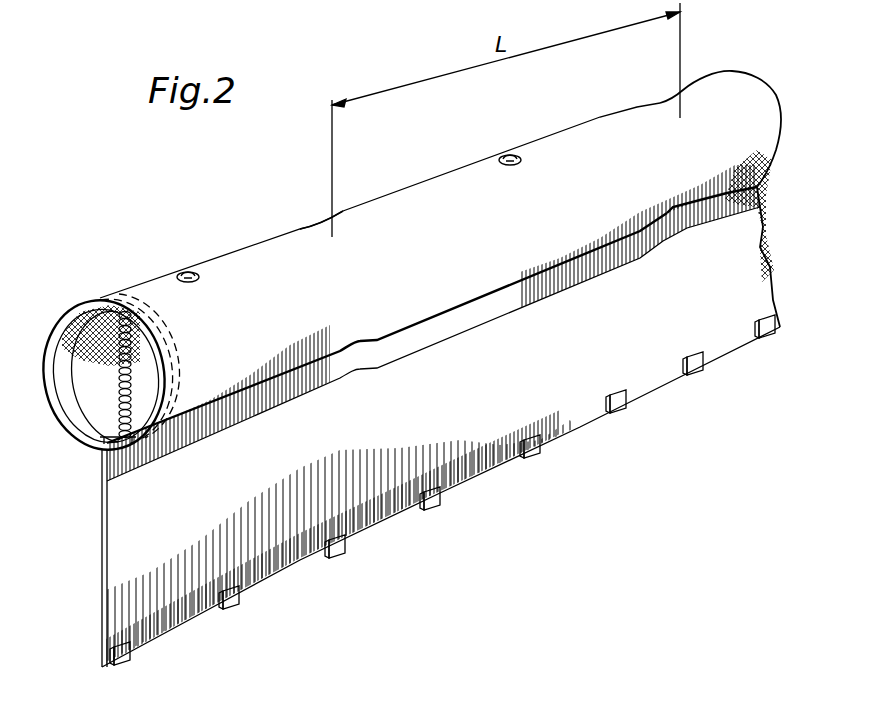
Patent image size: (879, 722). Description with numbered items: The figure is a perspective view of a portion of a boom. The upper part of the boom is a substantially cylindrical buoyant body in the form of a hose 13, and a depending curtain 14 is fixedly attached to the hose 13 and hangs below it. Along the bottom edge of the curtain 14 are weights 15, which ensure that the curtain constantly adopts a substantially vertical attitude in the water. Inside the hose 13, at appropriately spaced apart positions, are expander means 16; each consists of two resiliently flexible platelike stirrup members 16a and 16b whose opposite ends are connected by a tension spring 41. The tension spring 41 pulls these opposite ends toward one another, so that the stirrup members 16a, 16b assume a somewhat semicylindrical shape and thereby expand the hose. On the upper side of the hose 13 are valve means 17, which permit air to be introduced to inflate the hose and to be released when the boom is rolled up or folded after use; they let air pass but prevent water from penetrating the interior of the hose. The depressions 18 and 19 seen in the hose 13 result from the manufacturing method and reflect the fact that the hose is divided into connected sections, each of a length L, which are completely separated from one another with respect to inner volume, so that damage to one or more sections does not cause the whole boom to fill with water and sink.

The hose 13 is at (240, 252).
The curtain 14 is at (102, 538).
The weights 15 is at (338, 544).
The expander means 16 is at (108, 445).
The stirrup member 16a is at (76, 420).
The stirrup member 16b is at (200, 318).
The valve means 17 is at (188, 272).
The depression 18 is at (315, 227).
The depression 19 is at (667, 101).
The tension spring 41 is at (130, 377).